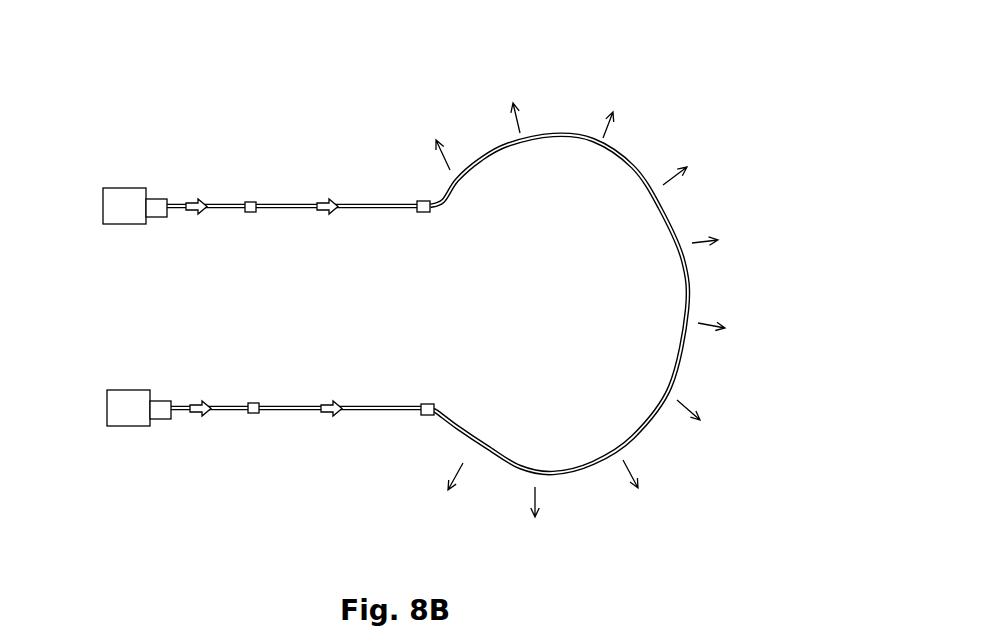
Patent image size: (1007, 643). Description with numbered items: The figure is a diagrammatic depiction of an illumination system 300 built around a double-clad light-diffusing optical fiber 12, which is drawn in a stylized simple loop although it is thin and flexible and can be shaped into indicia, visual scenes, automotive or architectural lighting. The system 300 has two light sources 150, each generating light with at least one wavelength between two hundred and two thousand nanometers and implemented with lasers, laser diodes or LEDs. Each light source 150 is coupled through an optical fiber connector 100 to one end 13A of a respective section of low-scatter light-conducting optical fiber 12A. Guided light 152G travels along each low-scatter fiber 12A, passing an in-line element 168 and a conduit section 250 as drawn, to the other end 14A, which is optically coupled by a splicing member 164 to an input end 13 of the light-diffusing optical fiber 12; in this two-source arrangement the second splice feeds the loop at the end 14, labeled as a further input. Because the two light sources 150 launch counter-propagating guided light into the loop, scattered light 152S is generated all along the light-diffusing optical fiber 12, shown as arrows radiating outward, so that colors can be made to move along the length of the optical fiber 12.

The illumination system 300 is at (737, 60).
The optical fiber connector 100 is at (155, 218).
The light source 150 is at (125, 188).
The one end of low-scatter light-conducting optical fiber 13A is at (175, 202).
The guided light 152G is at (188, 202).
The valve 168 is at (252, 200).
The conduit line 250 is at (222, 210).
The low-scatter light-conducting optical fiber 12A is at (282, 210).
The splicing member 164 is at (420, 203).
The another end of low-scatter light-conducting optical fiber 14A is at (408, 213).
The input end of light-diffusing optical fiber 13 is at (433, 200).
The end of light-diffusing optical fiber 14 is at (435, 407).
The light-diffusing optical fiber 12 is at (628, 165).
The scattered light 152S is at (513, 107).